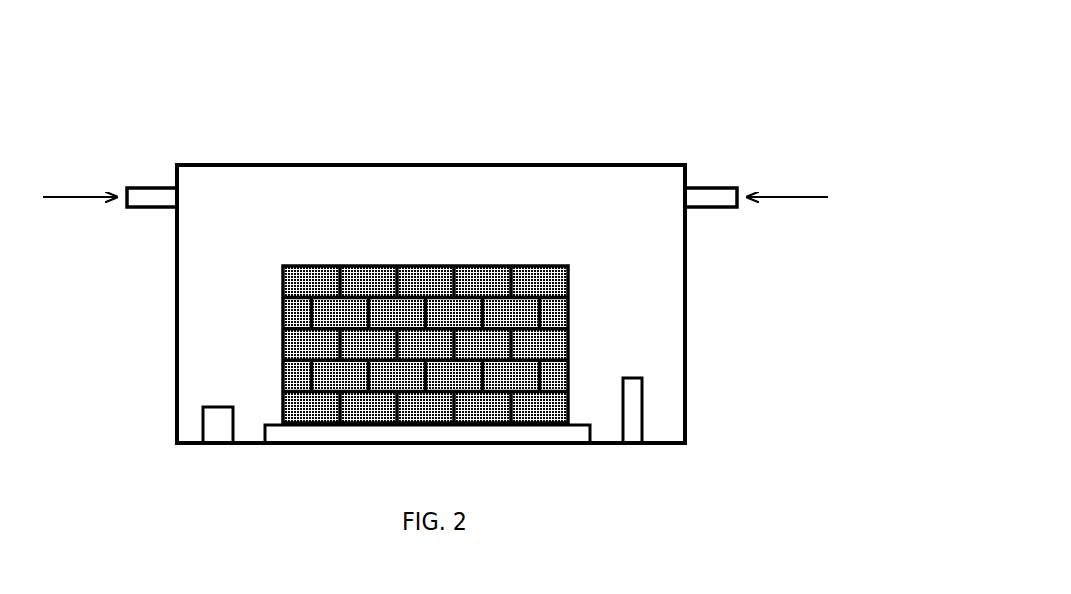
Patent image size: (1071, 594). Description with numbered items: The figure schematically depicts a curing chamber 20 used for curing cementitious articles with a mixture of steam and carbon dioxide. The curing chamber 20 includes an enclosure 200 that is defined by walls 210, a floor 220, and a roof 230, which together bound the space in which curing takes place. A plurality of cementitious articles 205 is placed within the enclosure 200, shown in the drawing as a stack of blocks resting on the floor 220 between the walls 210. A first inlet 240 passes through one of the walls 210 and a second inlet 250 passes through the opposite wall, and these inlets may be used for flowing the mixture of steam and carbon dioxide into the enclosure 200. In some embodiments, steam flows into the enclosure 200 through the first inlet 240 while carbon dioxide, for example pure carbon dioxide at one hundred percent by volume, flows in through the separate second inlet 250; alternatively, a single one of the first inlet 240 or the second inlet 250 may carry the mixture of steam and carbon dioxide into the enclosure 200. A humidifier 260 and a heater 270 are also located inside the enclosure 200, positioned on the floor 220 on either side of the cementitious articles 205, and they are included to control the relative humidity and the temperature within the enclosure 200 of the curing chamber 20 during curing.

The curing chamber 20 is at (439, 255).
The enclosure 200 is at (431, 288).
The cementitious articles 205 is at (566, 256).
The walls 210 is at (177, 325).
The floor 220 is at (660, 443).
The roof 230 is at (333, 165).
The first inlet 240 is at (138, 207).
The second inlet 250 is at (728, 207).
The humidifier 260 is at (220, 407).
The heater 270 is at (632, 378).